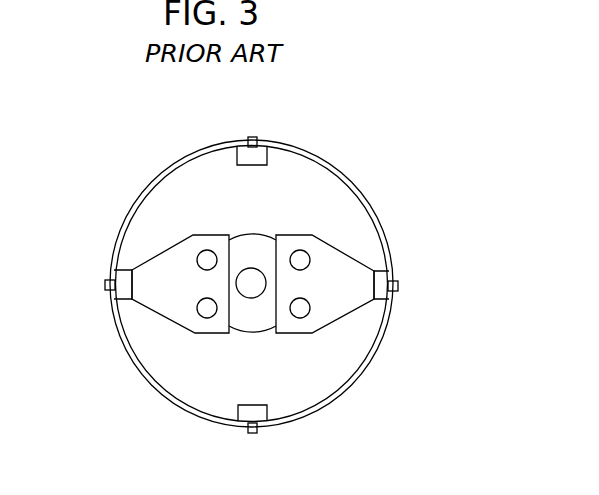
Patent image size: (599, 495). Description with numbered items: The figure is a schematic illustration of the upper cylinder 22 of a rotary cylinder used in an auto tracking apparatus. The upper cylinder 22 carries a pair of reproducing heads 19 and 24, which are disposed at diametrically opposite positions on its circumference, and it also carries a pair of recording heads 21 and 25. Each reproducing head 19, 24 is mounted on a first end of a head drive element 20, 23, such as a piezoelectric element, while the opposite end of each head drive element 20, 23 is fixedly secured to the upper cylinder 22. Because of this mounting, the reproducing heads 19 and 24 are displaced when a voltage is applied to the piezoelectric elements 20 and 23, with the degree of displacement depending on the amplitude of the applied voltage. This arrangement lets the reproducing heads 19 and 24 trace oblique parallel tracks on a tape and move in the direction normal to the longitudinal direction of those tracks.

The reproducing head 19 is at (105, 285).
The head drive element 20 is at (160, 254).
The recording head 21 is at (258, 137).
The upper cylinder 22 is at (340, 172).
The head drive element 23 is at (337, 257).
The reproducing head 24 is at (398, 286).
The recording head 25 is at (253, 433).